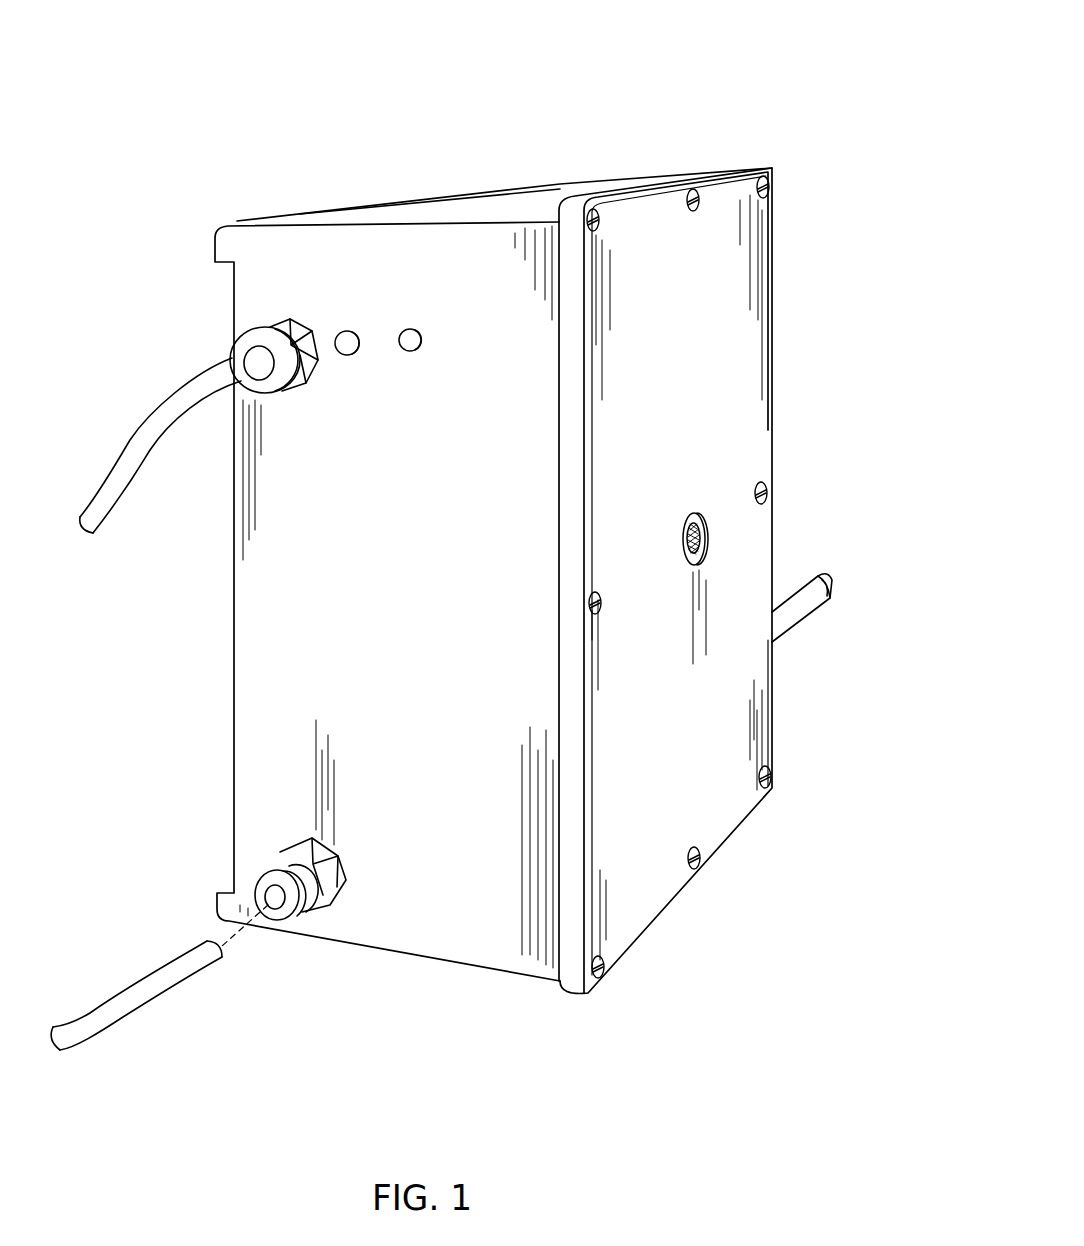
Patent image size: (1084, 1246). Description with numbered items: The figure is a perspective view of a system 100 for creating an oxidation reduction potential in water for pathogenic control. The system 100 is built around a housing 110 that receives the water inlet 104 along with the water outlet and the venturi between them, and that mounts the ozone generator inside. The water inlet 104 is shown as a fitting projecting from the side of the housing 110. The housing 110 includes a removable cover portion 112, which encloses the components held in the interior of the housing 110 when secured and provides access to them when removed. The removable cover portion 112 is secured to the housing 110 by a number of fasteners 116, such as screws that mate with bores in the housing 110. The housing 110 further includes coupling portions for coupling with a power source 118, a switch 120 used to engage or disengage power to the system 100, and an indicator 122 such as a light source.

The system 100 is at (441, 537).
The water inlet 104 is at (290, 908).
The housing 110 is at (512, 196).
The removable cover portion 112 is at (645, 910).
The fasteners 116 is at (700, 862).
The power source 118 is at (237, 343).
The switch 120 is at (347, 331).
The indicator 122 is at (410, 329).